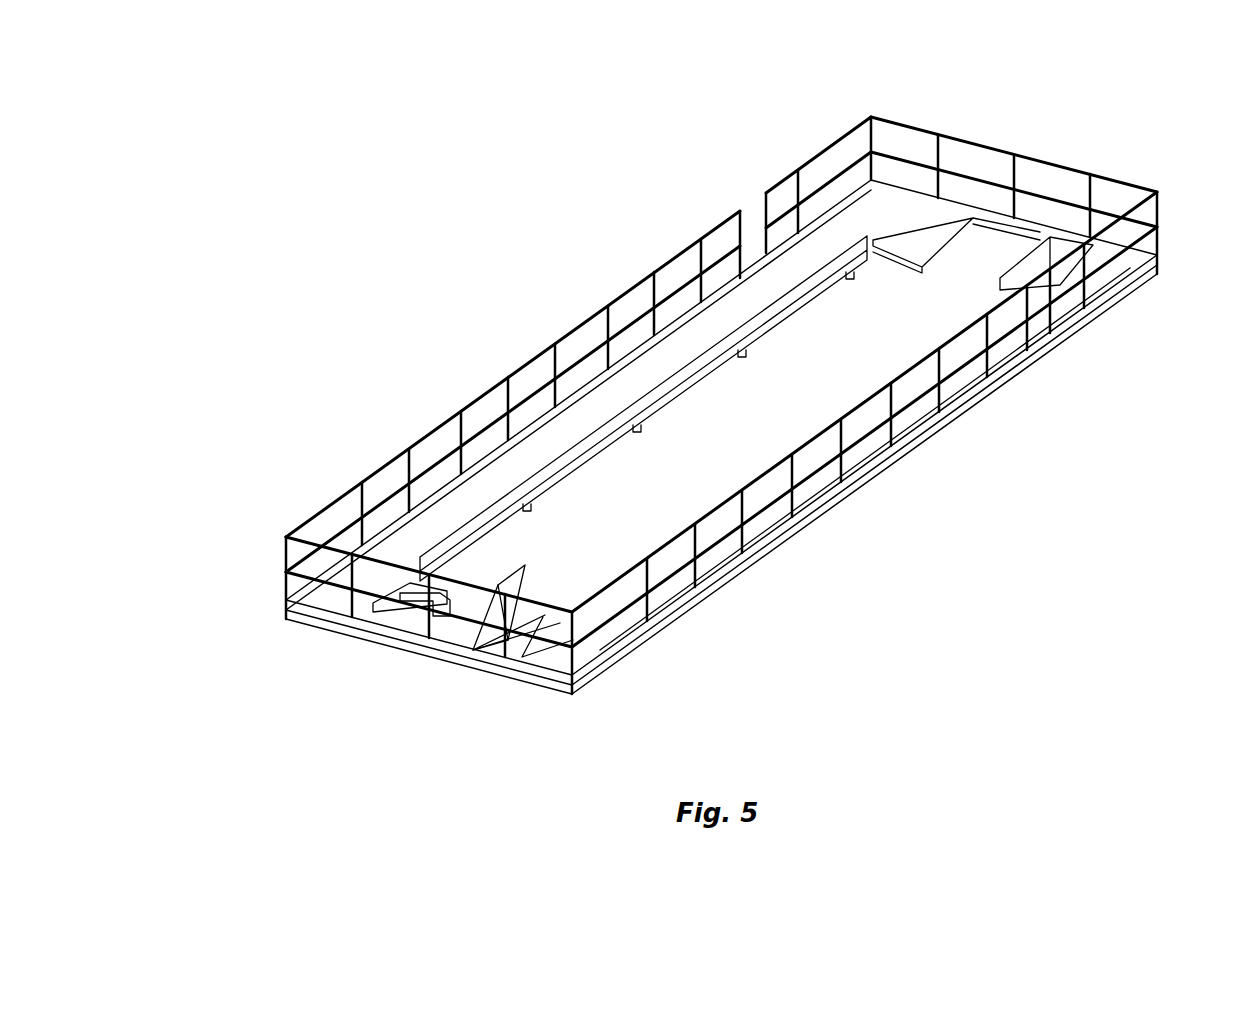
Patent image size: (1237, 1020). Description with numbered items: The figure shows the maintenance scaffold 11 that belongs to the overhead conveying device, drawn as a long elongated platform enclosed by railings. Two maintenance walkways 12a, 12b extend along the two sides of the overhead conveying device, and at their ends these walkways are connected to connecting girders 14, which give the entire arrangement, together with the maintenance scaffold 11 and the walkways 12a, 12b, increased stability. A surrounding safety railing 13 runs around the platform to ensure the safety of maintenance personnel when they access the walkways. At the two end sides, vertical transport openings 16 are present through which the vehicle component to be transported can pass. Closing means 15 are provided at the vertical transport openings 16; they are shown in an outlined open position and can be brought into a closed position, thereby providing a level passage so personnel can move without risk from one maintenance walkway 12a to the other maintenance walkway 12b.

The maintenance scaffold 11 is at (712, 424).
The maintenance walkway 12a is at (590, 412).
The maintenance walkway 12b is at (962, 375).
The surrounding safety railing 13 is at (648, 280).
The connecting girder 14 is at (1060, 238).
The closing means 15 is at (497, 605).
The vertical transport opening 16 is at (983, 247).